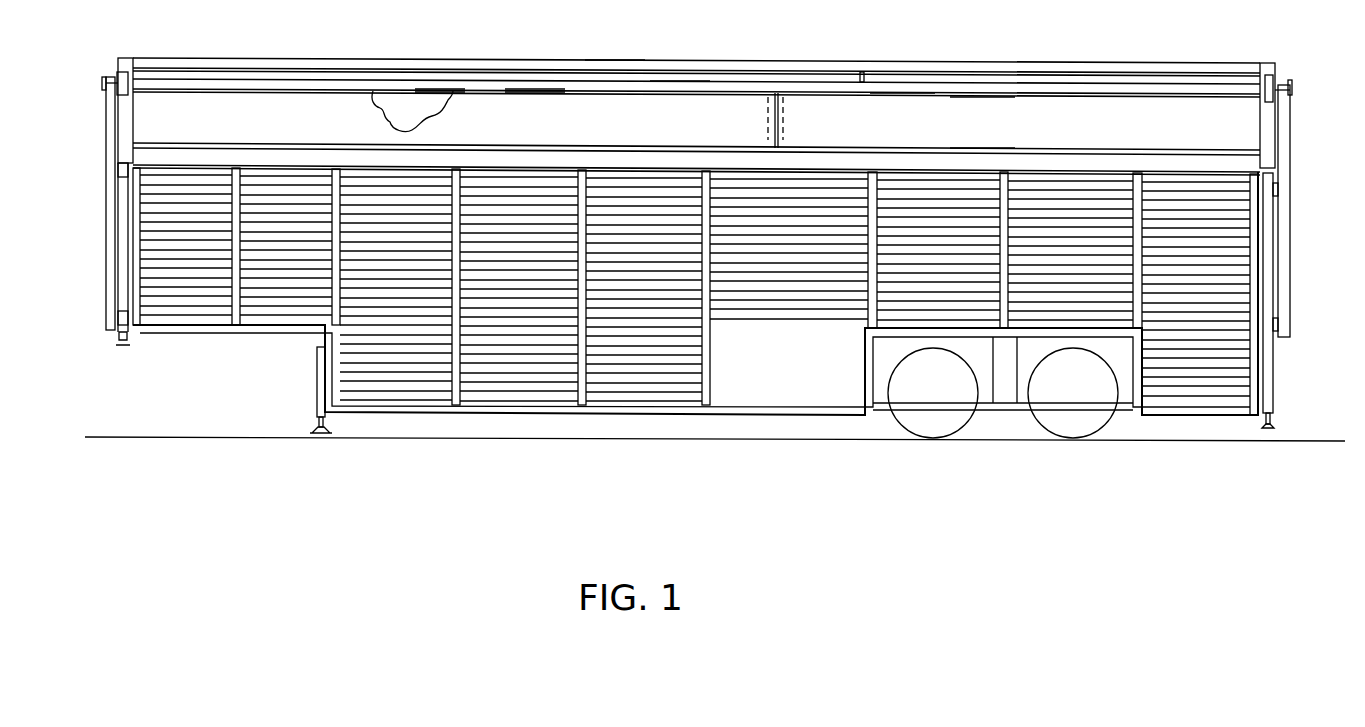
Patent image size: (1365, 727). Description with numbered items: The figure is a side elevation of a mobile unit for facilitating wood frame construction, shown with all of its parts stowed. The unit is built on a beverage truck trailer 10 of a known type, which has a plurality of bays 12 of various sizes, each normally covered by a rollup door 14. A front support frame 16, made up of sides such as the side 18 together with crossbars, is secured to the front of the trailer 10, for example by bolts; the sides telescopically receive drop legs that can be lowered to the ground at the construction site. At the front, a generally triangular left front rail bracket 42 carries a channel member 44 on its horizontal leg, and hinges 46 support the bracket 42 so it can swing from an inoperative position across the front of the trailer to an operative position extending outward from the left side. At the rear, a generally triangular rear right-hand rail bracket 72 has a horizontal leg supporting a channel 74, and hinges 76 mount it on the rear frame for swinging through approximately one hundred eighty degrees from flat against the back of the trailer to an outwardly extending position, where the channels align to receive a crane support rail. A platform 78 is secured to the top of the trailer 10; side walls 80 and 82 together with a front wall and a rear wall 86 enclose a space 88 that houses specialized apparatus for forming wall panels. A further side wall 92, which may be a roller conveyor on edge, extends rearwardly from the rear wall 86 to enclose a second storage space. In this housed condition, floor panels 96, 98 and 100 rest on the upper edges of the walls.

The beverage truck trailer 10 is at (505, 408).
The bays 12 is at (624, 390).
The rollup door 14 is at (656, 396).
The front support frame 16 is at (127, 267).
The side 18 is at (1268, 283).
The left front rail bracket 42 is at (110, 164).
The channel member 44 is at (103, 82).
The hinges 46 is at (118, 181).
The rear right-hand rail bracket 72 is at (1283, 133).
The channel 74 is at (1292, 90).
The hinges 76 is at (1279, 189).
The platform 78 is at (736, 157).
The side wall 80 is at (428, 103).
The side wall 82 is at (534, 100).
The rear wall 86 is at (783, 123).
The space 88 is at (405, 105).
The side wall 92 is at (980, 115).
The floor panel 96 is at (898, 88).
The floor panel 98 is at (678, 78).
The floor panel 100 is at (612, 62).